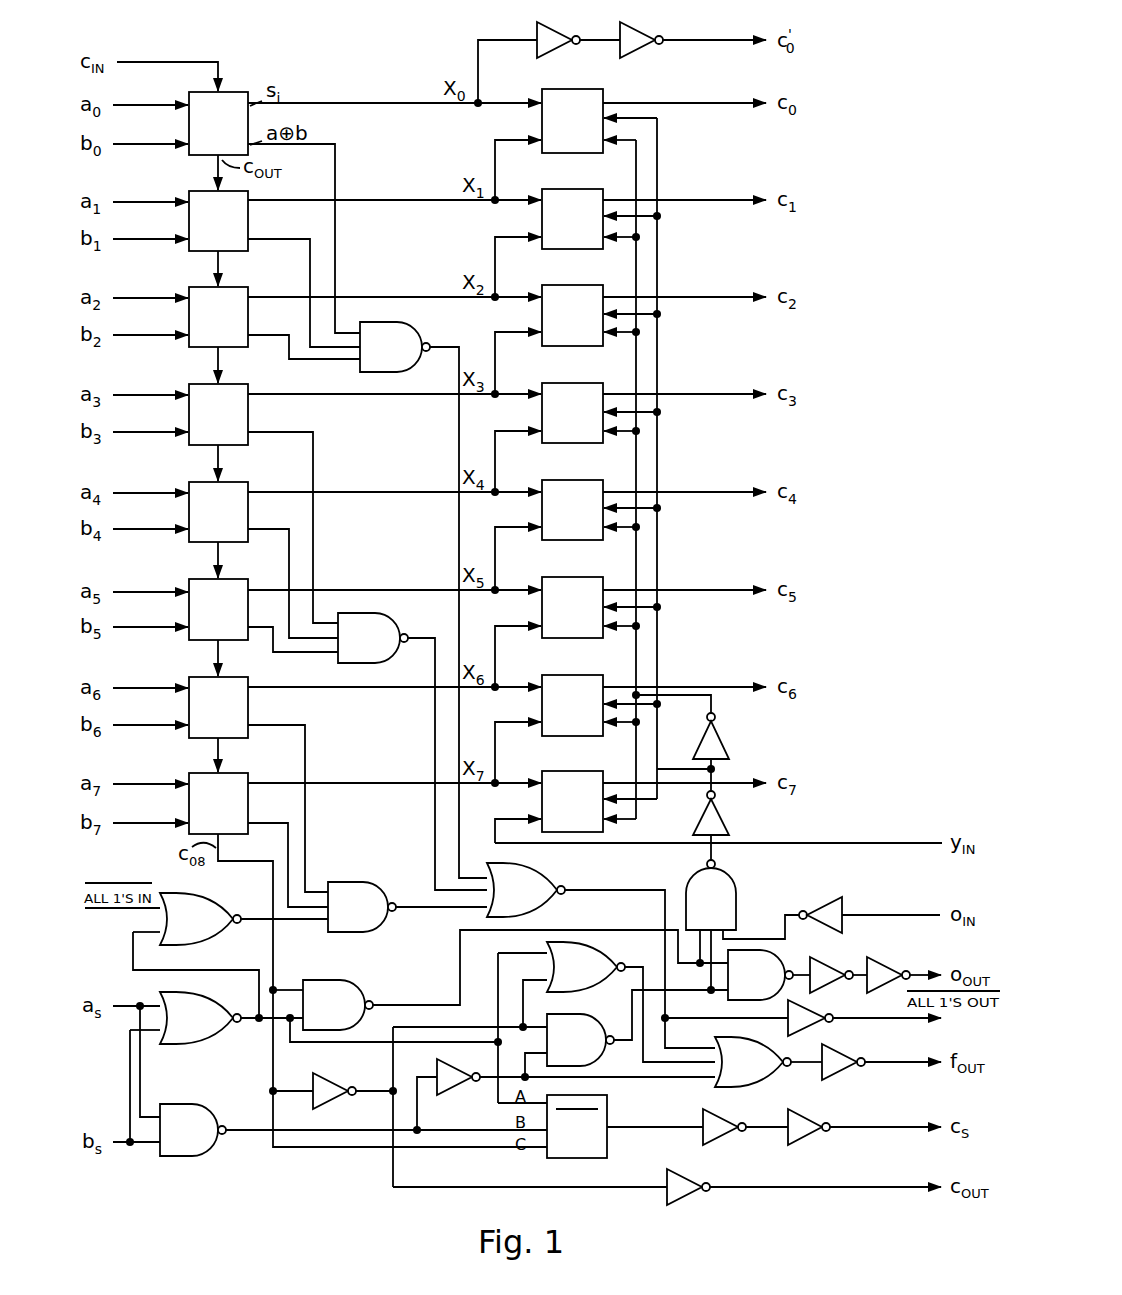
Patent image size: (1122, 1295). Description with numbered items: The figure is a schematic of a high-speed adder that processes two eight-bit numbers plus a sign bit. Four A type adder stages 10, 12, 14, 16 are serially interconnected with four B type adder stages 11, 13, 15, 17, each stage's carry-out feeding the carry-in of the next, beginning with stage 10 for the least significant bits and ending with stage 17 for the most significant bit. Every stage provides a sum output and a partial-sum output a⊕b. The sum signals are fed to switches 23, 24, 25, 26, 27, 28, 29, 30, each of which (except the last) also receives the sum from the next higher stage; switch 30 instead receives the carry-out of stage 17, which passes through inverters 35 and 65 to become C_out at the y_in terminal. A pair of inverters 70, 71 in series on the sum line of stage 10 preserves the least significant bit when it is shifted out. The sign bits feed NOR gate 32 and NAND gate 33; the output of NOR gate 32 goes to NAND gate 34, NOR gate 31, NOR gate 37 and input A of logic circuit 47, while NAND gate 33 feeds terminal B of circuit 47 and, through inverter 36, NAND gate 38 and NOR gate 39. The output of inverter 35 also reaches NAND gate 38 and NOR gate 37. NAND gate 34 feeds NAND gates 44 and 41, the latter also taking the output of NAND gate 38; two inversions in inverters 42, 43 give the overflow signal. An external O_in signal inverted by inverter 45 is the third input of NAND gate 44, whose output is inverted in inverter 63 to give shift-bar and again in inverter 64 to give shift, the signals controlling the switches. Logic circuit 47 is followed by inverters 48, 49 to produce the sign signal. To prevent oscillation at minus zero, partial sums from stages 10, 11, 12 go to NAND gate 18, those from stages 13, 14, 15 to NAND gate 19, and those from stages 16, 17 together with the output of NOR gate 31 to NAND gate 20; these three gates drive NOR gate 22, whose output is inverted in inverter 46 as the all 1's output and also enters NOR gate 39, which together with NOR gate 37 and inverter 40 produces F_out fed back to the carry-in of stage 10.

The A type adder stage 10 is at (218, 123).
The B type adder stage 11 is at (218, 221).
The A type adder stage 12 is at (218, 317).
The B type adder stage 13 is at (218, 414).
The A type adder stage 14 is at (218, 512).
The B type adder stage 15 is at (218, 609).
The A type adder stage 16 is at (218, 707).
The B type adder stage 17 is at (218, 803).
The first NAND gate 18 is at (395, 347).
The second NAND gate 19 is at (373, 638).
The third NAND gate 20 is at (362, 907).
The NOR gate 22 is at (526, 890).
The switch 23 is at (572, 121).
The switch 24 is at (572, 219).
The switch 25 is at (572, 315).
The switch 26 is at (572, 413).
The switch 27 is at (572, 510).
The switch 28 is at (572, 607).
The switch 29 is at (572, 705).
The switch 30 is at (572, 801).
The NOR gate 31 is at (200, 919).
The NOR gate 32 is at (200, 1018).
The NAND gate 33 is at (193, 1130).
The NAND gate 34 is at (338, 1005).
The inverter 35 is at (328, 1085).
The inverter 36 is at (449, 1069).
The NOR gate 37 is at (586, 967).
The NAND gate 38 is at (580, 1040).
The NOR gate 39 is at (753, 1062).
The inverter 40 is at (835, 1057).
The NAND gate 41 is at (760, 975).
The inverter 42 is at (820, 967).
The inverter 43 is at (876, 967).
The NAND gate 44 is at (711, 895).
The inverter 45 is at (836, 905).
The inverter 46 is at (808, 1010).
The logic circuit 47 is at (577, 1126).
The inverter 48 is at (716, 1121).
The inverter 49 is at (801, 1121).
The inverter 63 is at (716, 823).
The inverter 64 is at (716, 746).
The inverter 65 is at (684, 1182).
The inverter 70 is at (549, 38).
The inverter 71 is at (632, 38).